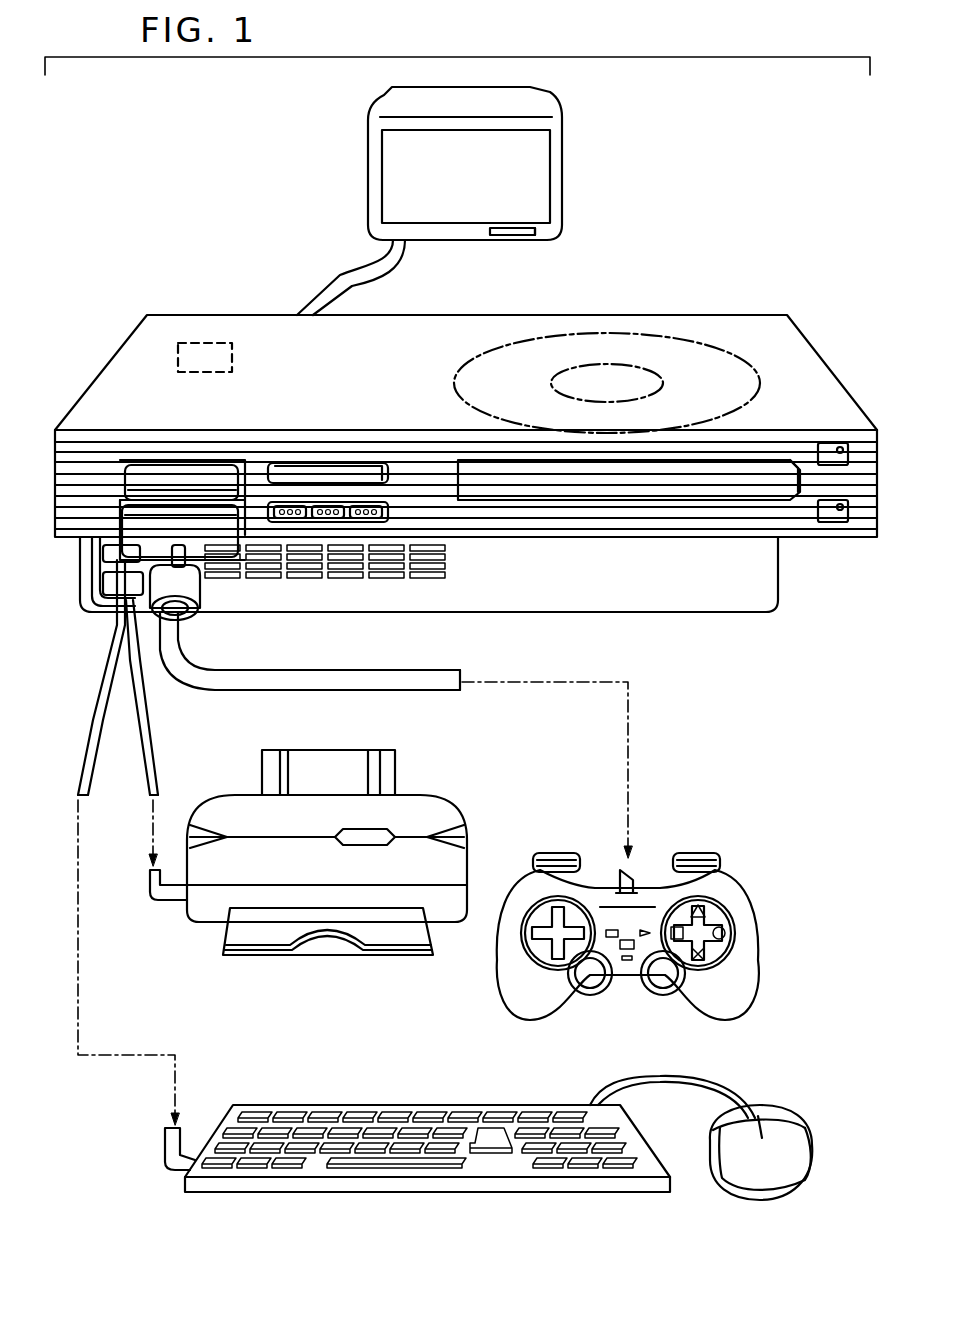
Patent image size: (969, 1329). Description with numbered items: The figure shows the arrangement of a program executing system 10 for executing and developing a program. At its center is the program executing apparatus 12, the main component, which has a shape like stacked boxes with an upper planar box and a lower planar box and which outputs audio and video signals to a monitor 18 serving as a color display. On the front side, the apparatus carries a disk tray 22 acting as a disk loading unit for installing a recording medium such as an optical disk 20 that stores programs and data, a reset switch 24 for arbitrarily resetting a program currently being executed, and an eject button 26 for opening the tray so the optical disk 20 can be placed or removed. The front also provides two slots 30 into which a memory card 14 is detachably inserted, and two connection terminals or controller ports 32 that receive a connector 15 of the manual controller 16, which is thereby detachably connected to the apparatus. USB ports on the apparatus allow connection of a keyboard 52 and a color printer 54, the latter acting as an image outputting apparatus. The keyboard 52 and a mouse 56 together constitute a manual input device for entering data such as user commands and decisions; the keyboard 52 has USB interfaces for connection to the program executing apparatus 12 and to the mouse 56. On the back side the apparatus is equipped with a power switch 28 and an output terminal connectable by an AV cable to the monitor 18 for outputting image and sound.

The program executing system 10 is at (252, 218).
The program executing apparatus 12 is at (680, 323).
The memory card 14 is at (170, 477).
The connector 15 is at (217, 517).
The manual controller 16 is at (646, 872).
The monitor 18 is at (570, 132).
The optical disk 20 is at (612, 352).
The disk tray 22 is at (785, 480).
The reset switch 24 is at (828, 450).
The eject button 26 is at (837, 518).
The power switch 28 is at (207, 343).
The slots 30 is at (123, 497).
The connection terminals (controller ports) 32 is at (120, 513).
The keyboard 52 is at (425, 1103).
The color printer 54 is at (445, 800).
The mouse 56 is at (775, 1112).